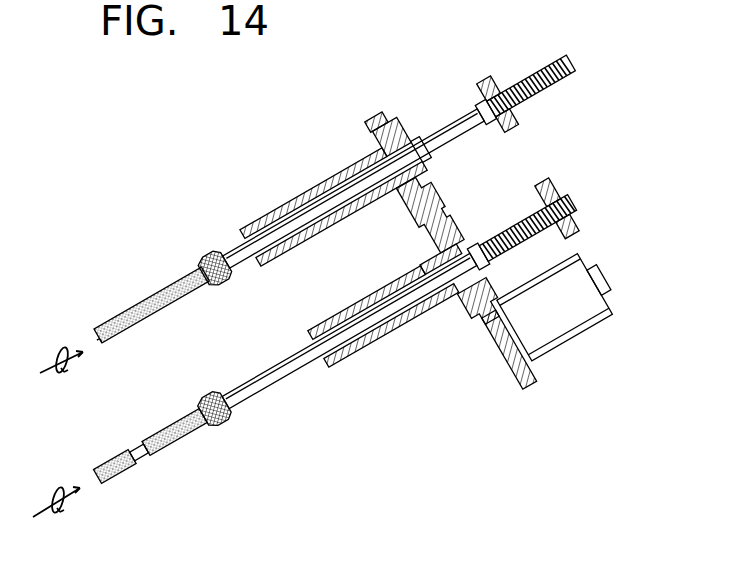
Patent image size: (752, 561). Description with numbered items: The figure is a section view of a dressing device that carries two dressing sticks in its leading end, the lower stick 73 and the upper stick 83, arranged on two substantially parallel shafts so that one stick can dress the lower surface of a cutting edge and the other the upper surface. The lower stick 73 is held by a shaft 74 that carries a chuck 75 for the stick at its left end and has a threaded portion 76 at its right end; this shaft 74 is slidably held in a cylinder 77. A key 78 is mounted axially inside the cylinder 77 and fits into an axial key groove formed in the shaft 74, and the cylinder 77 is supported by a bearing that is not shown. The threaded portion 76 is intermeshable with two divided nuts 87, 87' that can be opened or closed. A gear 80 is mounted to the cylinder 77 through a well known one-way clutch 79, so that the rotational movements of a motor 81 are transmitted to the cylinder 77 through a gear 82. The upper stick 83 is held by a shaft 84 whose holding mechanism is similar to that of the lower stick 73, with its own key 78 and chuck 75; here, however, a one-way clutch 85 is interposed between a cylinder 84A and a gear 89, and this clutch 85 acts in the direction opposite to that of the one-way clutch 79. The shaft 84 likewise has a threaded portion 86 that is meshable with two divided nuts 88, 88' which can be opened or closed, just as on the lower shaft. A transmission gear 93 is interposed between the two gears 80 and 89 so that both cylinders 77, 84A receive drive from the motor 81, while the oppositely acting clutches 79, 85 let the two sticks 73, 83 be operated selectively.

The stick 73 is at (120, 473).
The shaft 74 is at (268, 392).
The chuck for stick 75 is at (212, 295).
The threaded portion 76 is at (571, 197).
The cylinder 77 is at (340, 360).
The key 78 is at (409, 140).
The one-way clutch 79 is at (427, 255).
The gear 80 is at (463, 303).
The motor 81 is at (587, 330).
The gear 82 is at (505, 373).
The stick 83 is at (137, 307).
The shaft 84 is at (223, 250).
The cylinder 84A is at (277, 213).
The one-way clutch 85 is at (376, 147).
The threaded portion 86 is at (576, 67).
The divided nut 87 is at (578, 173).
The divided nut 87' is at (611, 230).
The divided nut 88 is at (516, 67).
The divided nut 88' is at (550, 115).
The gear 89 is at (373, 123).
The connecting bracket 93 is at (446, 203).